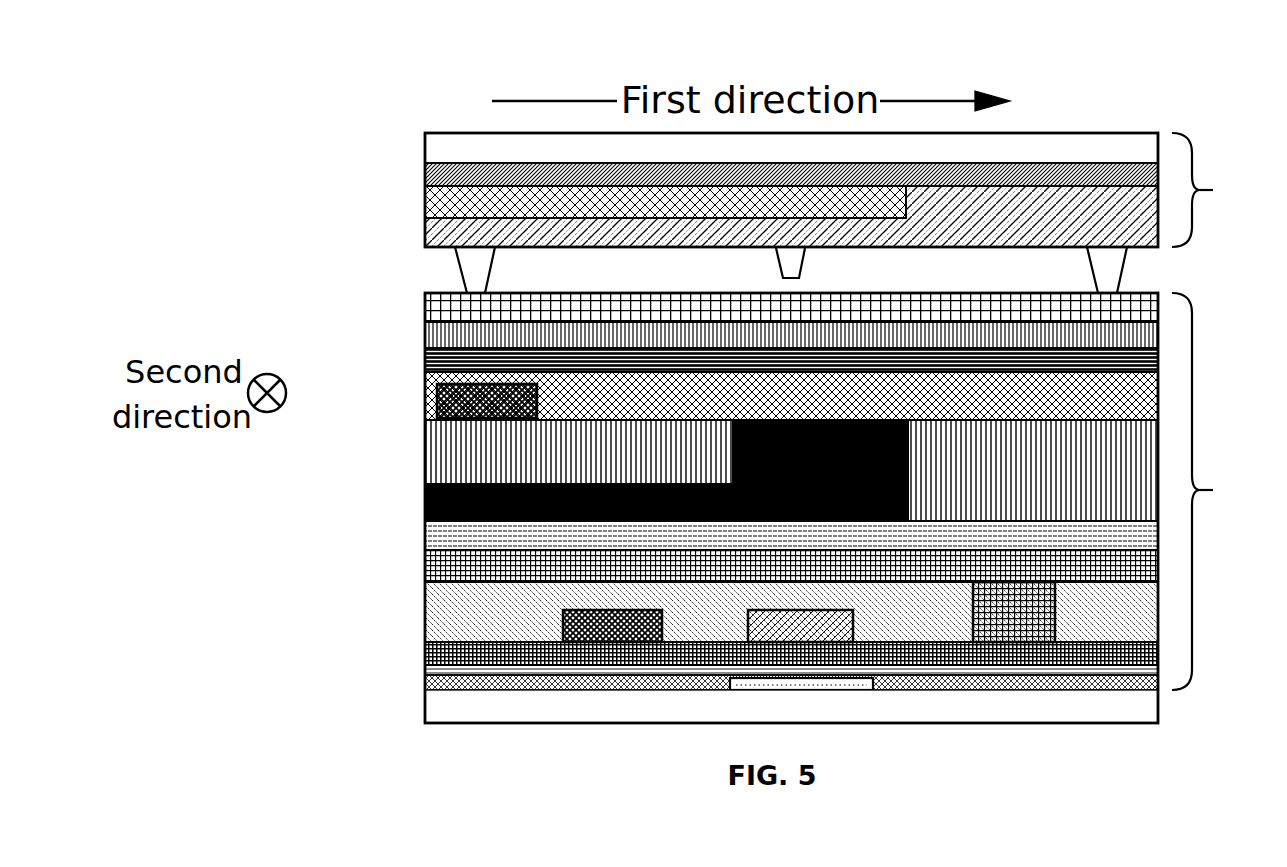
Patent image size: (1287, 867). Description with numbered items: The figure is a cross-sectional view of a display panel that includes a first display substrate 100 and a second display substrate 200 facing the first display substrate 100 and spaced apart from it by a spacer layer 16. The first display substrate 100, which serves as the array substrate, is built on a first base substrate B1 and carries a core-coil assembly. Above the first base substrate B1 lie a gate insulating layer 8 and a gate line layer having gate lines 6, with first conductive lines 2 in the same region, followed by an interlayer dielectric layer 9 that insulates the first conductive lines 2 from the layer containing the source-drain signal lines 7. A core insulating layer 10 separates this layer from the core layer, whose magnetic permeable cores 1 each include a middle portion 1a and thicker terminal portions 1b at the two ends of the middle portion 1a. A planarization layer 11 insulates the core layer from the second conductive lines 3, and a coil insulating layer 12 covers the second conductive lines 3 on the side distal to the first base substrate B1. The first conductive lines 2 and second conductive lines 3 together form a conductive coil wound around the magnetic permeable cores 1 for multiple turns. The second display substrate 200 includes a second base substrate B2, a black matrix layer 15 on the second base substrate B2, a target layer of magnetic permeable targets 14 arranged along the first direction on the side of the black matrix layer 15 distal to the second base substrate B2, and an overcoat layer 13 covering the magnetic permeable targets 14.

The second display substrate 200 is at (1227, 190).
The first display substrate 100 is at (1227, 491).
The second base substrate B2 is at (425, 144).
The black matrix layer 15 is at (425, 173).
The magnetic permeable targets 14 is at (425, 201).
The overcoat layer 13 is at (425, 232).
The spacer layer 16 is at (458, 268).
The coil insulating layer 12 is at (428, 396).
The second conductive lines 3 is at (487, 402).
The planarization layer 11 is at (428, 456).
The magnetic permeable cores 1 is at (620, 470).
The middle portion 1a is at (579, 502).
The terminal portions 1b is at (820, 470).
The core insulating layer 10 is at (428, 527).
The source-drain signal lines 7 is at (425, 566).
The interlayer dielectric layer 9 is at (425, 612).
The first conductive lines 2 is at (612, 627).
The gate lines 6 is at (800, 627).
The gate insulating layer 8 is at (425, 648).
The first base substrate B1 is at (425, 704).